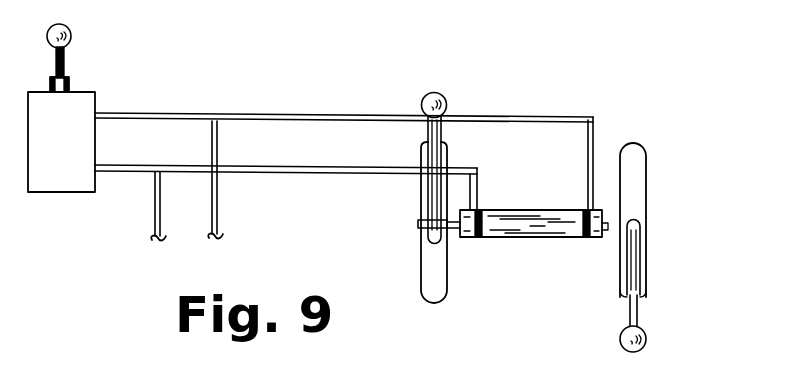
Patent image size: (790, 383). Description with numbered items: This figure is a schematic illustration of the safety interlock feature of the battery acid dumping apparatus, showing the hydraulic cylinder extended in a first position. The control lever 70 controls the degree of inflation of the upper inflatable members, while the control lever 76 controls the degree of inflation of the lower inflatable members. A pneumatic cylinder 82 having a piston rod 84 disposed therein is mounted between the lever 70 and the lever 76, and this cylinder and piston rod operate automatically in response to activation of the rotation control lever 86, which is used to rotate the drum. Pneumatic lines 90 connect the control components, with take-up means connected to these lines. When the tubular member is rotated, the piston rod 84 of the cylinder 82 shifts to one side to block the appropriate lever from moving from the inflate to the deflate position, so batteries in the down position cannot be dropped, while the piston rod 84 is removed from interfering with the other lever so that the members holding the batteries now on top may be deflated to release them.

The control lever 70 is at (646, 345).
The control lever 76 is at (445, 102).
The pneumatic cylinder 82 is at (538, 227).
The piston rod 84 is at (448, 229).
The rotation control lever 86 is at (67, 28).
The pneumatic lines 90 is at (312, 115).